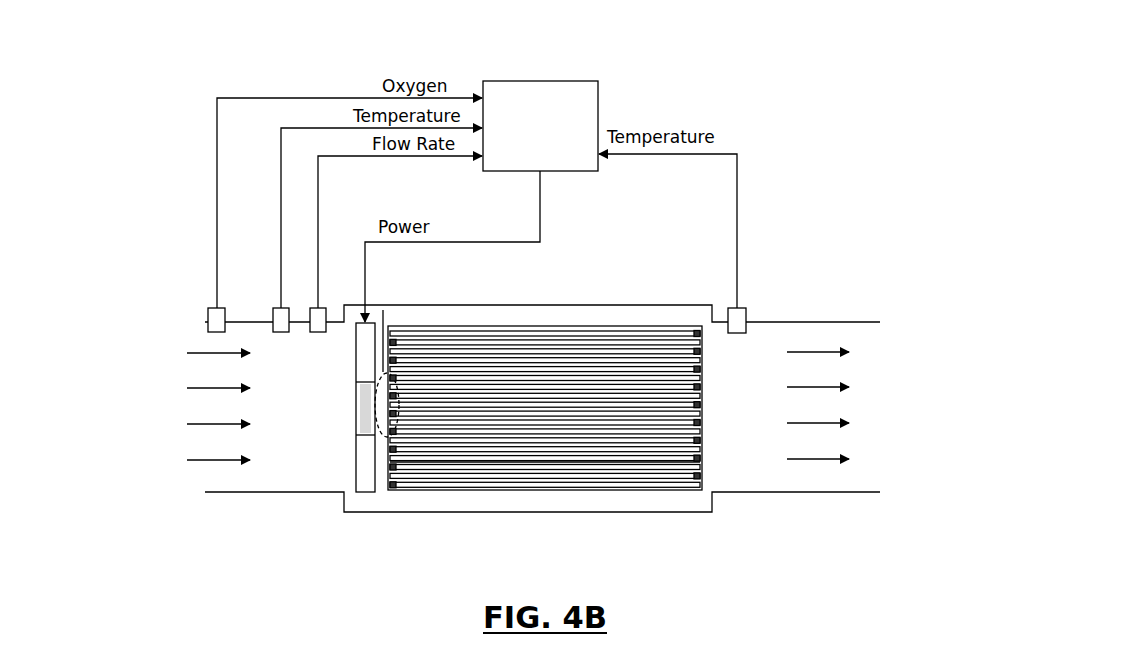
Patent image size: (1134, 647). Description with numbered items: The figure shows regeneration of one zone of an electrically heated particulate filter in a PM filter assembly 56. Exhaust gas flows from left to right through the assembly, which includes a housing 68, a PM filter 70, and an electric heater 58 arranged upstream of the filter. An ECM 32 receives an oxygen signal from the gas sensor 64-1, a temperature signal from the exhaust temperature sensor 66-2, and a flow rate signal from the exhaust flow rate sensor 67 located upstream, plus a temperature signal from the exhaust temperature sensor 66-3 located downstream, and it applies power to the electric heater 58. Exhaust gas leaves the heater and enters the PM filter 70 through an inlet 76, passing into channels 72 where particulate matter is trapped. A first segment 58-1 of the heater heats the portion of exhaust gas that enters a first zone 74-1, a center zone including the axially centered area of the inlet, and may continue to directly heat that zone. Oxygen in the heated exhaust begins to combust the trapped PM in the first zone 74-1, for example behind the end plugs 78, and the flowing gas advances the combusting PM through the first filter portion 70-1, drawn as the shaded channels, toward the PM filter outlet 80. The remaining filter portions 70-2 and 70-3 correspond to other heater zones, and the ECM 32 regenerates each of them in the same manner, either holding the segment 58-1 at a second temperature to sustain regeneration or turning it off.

The ECM 32 is at (542, 81).
The PM filter assembly 56 is at (206, 214).
The electric heater 58 is at (324, 433).
The first segment 58-1 is at (367, 387).
The gas sensor 64-1 is at (216, 308).
The exhaust temperature sensor 66-2 is at (281, 308).
The exhaust temperature sensor 66-3 is at (737, 308).
The exhaust flow rate sensor 67 is at (318, 308).
The housing 68 is at (555, 419).
The PM filter 70 is at (556, 419).
The first filter portion 70-1 is at (448, 410).
The filter portion 70-2 is at (610, 355).
The filter portion 70-3 is at (647, 467).
The channels 72 is at (460, 462).
The first zone 74-1 is at (383, 310).
The inlet 76 is at (380, 450).
The end plugs 78 is at (392, 424).
The PM filter outlet 80 is at (706, 407).